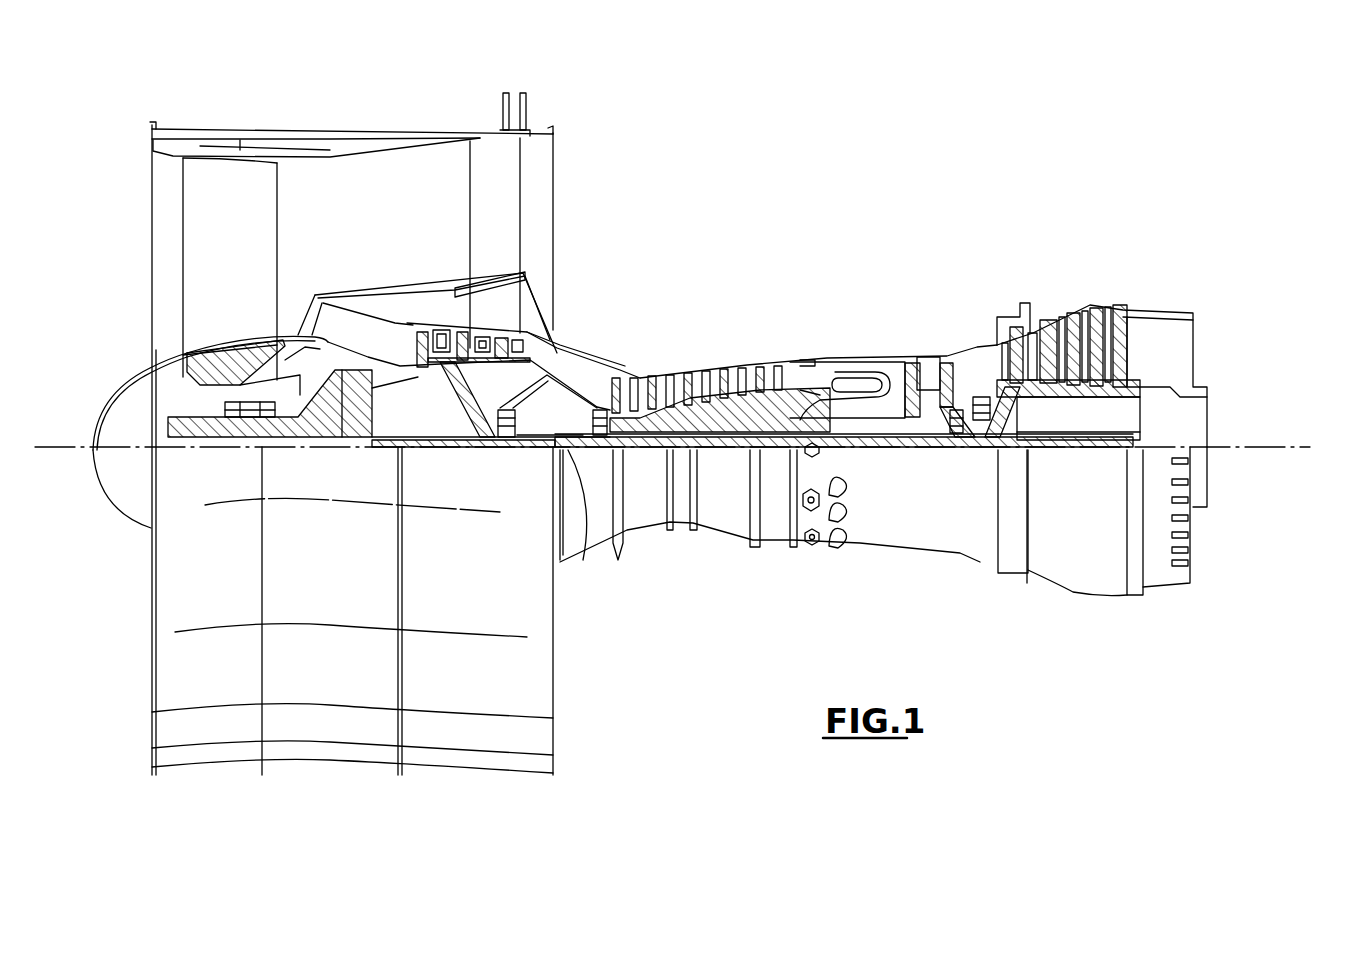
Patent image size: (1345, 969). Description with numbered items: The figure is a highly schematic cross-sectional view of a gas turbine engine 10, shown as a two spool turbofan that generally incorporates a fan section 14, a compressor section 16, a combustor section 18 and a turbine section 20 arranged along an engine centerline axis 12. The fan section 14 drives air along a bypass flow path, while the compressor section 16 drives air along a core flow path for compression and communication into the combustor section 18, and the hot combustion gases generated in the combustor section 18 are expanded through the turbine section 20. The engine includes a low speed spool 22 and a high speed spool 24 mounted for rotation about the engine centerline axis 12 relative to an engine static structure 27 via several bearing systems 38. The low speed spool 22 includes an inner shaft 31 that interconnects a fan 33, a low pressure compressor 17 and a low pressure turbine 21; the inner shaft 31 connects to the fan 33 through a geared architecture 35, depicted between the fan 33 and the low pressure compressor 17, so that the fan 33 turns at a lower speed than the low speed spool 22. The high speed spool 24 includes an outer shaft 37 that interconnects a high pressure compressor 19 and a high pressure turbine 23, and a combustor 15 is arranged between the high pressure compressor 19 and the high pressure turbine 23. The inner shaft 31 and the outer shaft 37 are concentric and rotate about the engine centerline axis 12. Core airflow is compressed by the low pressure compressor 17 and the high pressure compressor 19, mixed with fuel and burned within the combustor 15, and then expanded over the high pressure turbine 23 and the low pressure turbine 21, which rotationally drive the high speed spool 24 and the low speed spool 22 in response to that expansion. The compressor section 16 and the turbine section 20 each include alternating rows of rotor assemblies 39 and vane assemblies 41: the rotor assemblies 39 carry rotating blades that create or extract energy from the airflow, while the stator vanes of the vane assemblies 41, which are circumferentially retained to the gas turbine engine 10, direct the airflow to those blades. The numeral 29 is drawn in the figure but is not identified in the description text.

The gas turbine engine 10 is at (885, 172).
The engine centerline axis 12 is at (1298, 447).
The fan section 14 is at (272, 118).
The combustor 15 is at (855, 384).
The compressor section 16 is at (607, 342).
The low pressure compressor 17 is at (487, 325).
The combustor section 18 is at (852, 328).
The high pressure compressor 19 is at (700, 412).
The turbine section 20 is at (1020, 288).
The low pressure turbine 21 is at (1070, 313).
The low speed spool 22 is at (727, 460).
The high pressure turbine 23 is at (930, 356).
The high speed spool 24 is at (770, 400).
The engine static structure 27 is at (772, 553).
The bearing system 29 is at (975, 440).
The inner shaft 31 is at (583, 556).
The fan 33 is at (241, 275).
The geared architecture 35 is at (362, 430).
The outer shaft 37 is at (867, 440).
The bearing systems 38 is at (508, 430).
The rotor assemblies 39 is at (388, 336).
The vane assemblies 41 is at (447, 314).